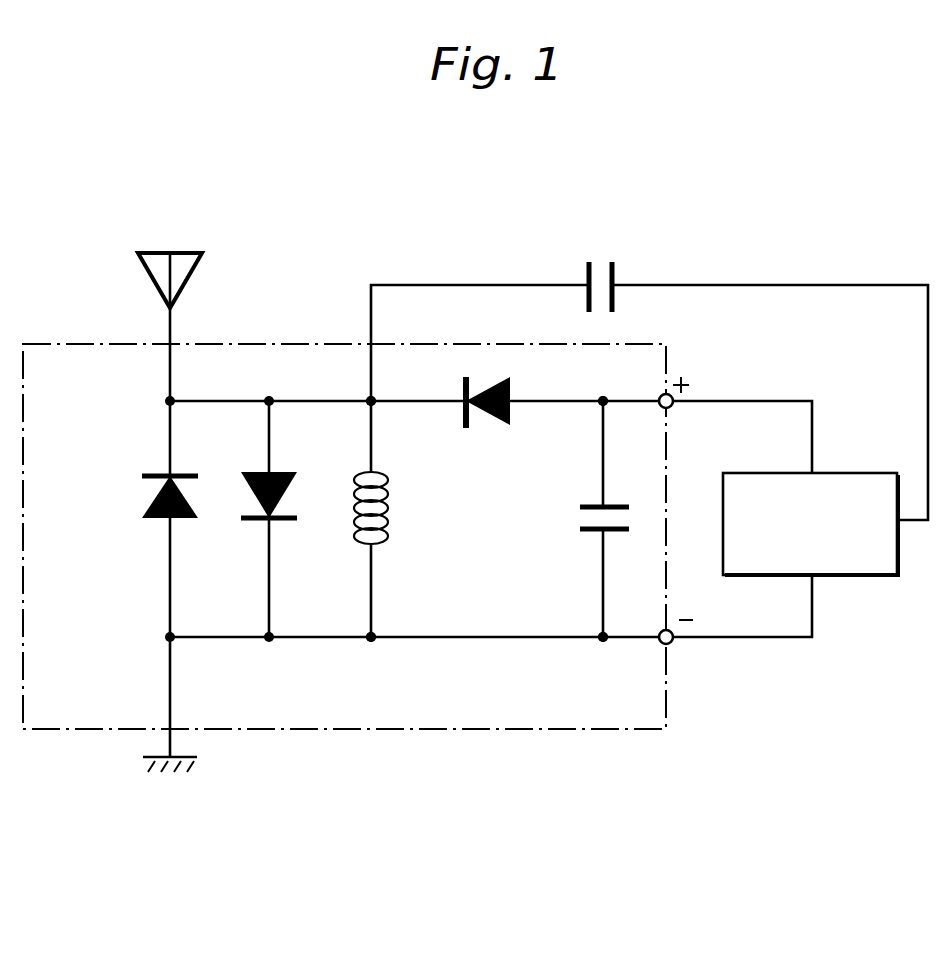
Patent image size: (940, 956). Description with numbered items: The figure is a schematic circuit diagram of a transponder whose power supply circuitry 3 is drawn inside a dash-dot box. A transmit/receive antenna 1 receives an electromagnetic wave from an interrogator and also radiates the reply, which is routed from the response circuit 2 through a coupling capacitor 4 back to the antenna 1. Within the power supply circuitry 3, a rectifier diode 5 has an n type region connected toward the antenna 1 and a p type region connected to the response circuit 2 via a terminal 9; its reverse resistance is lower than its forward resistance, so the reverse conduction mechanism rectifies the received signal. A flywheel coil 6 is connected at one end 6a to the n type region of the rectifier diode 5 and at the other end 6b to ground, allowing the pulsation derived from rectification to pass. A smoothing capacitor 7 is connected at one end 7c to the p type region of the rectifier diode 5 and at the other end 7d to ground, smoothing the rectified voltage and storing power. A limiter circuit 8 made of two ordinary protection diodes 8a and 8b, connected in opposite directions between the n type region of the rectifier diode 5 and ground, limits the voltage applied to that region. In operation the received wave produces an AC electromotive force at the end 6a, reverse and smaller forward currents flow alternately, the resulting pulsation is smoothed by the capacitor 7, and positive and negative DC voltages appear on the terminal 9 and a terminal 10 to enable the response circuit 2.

The transmit/receive antenna 1 is at (160, 252).
The response circuit 2 is at (866, 578).
The power supply circuitry 3 is at (497, 731).
The coupling capacitor 4 is at (620, 268).
The rectifier diode 5 is at (490, 428).
The flywheel coil 6 is at (354, 522).
The one end of flywheel coil 6a is at (369, 399).
The other end of flywheel coil 6b is at (372, 635).
The smoothing capacitor 7 is at (615, 505).
The one end of smoothing capacitor 7c is at (603, 400).
The other end of smoothing capacitor 7d is at (602, 635).
The limiter circuit 8 is at (192, 516).
The protection diode 8a is at (250, 523).
The protection diode 8b is at (152, 520).
The terminal 9 is at (673, 405).
The terminal 10 is at (671, 643).